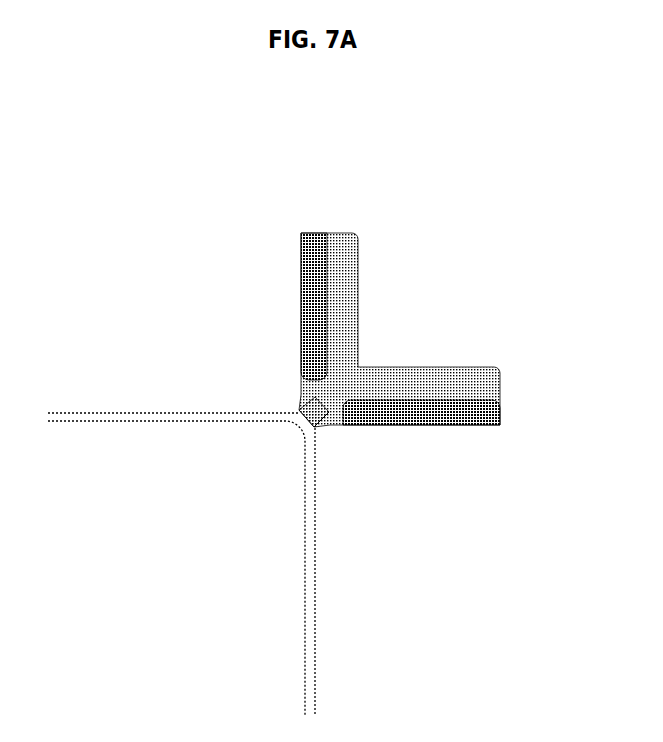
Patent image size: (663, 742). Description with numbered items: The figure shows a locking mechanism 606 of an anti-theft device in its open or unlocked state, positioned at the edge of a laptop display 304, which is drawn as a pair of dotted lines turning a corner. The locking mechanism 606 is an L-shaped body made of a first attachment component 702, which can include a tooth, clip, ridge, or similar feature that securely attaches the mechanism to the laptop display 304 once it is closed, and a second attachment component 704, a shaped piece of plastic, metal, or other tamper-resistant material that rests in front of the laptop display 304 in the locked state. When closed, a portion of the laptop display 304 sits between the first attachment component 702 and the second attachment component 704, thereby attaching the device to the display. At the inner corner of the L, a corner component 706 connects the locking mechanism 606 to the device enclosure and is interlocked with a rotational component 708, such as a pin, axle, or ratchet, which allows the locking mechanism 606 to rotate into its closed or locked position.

The locking mechanism 606 is at (278, 189).
The first attachment component 702 is at (307, 340).
The second attachment component 704 is at (483, 373).
The corner component 706 is at (305, 408).
The rotational component 708 is at (321, 412).
The laptop display 304 is at (83, 422).